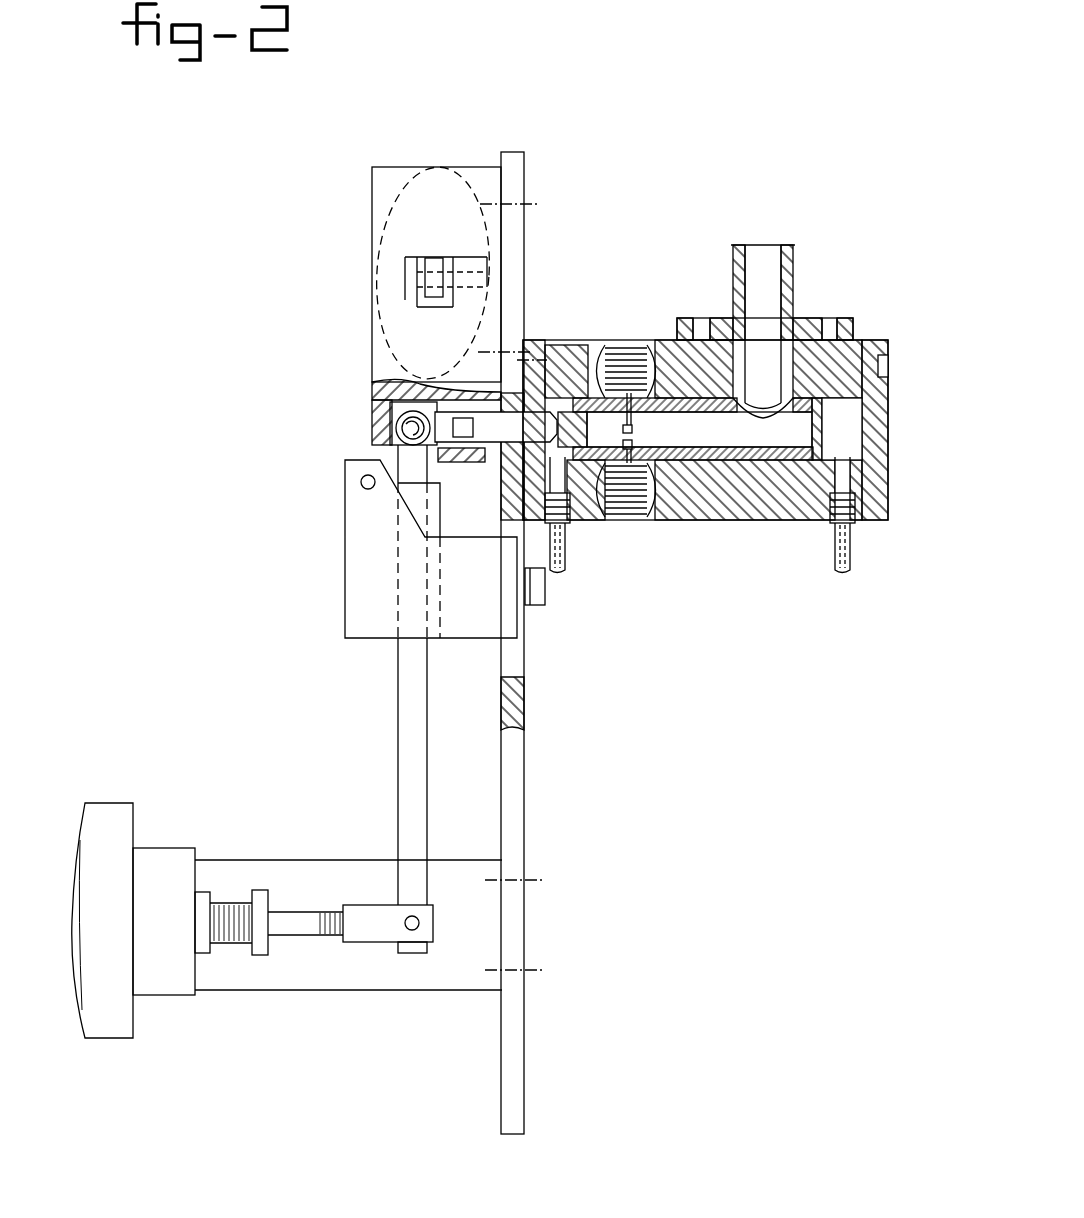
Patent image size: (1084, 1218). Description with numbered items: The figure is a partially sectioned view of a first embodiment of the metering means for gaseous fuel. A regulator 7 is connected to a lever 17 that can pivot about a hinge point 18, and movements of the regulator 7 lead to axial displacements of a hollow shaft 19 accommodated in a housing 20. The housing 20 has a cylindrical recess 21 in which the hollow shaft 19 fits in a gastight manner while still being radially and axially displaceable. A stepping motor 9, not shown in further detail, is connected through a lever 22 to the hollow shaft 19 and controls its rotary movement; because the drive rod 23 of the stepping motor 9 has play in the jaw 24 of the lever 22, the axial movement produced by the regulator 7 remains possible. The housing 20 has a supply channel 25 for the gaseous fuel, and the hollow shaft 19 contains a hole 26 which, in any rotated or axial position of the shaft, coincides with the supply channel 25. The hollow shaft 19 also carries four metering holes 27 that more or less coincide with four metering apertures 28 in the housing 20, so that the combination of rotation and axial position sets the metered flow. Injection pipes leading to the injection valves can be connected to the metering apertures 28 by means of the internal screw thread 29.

The regulator 7 is at (165, 858).
The stepping motor 9 is at (366, 282).
The lever 17 is at (398, 708).
The hinge point 18 is at (361, 482).
The hollow shaft 19 is at (713, 462).
The housing 20 is at (848, 352).
The cylindrical recess 21 is at (855, 420).
The lever 22 is at (407, 375).
The drive rod 23 is at (435, 266).
The jaw 24 is at (438, 308).
The supply channel 25 is at (770, 285).
The hole 26 is at (777, 414).
The metering holes 27 is at (634, 446).
The metering apertures 28 is at (603, 390).
The internal screw thread 29 is at (633, 358).